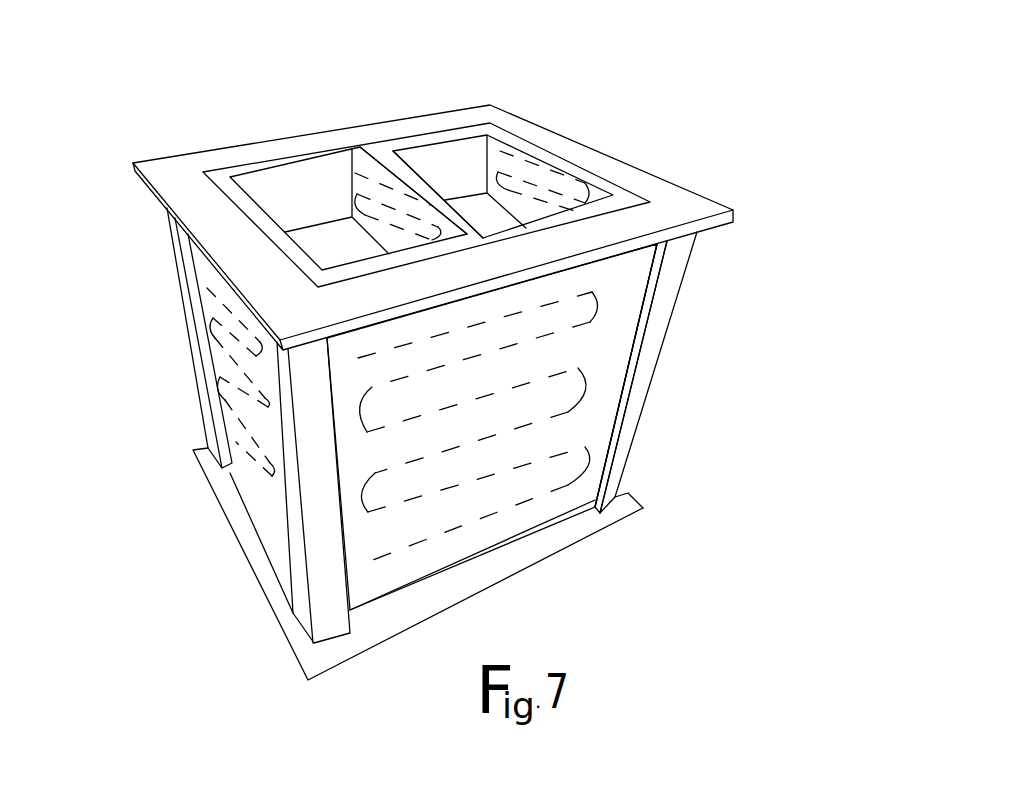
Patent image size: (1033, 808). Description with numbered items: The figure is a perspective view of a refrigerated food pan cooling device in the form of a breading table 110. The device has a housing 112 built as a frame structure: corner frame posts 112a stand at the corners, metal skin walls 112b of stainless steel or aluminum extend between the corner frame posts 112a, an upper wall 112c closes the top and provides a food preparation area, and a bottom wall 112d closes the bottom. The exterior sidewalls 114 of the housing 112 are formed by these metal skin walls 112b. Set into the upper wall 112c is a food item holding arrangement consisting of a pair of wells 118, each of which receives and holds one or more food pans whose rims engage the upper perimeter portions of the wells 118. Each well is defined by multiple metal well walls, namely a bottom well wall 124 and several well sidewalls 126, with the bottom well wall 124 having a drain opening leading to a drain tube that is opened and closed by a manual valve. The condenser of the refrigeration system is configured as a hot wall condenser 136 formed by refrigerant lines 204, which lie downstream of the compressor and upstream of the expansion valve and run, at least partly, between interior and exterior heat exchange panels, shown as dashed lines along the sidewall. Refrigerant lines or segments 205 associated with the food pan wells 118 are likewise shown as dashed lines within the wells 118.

The breading table 110 is at (626, 64).
The housing 112 is at (190, 146).
The corner frame posts 112a is at (192, 345).
The metal skin walls 112b is at (262, 487).
The upper wall 112c is at (170, 174).
The bottom wall 112d is at (577, 532).
The exterior sidewalls 114 is at (604, 463).
The wells 118 is at (330, 172).
The bottom well wall 124 is at (300, 237).
The well sidewalls 126 is at (352, 148).
The hot wall condenser 136 is at (629, 376).
The refrigerant lines 204 is at (225, 411).
The refrigerant lines or segments 205 is at (383, 193).